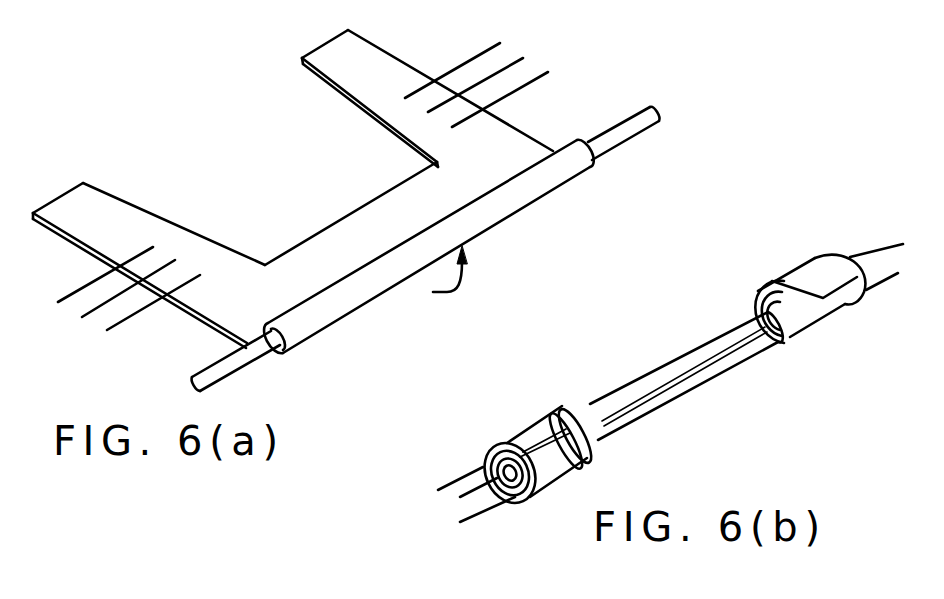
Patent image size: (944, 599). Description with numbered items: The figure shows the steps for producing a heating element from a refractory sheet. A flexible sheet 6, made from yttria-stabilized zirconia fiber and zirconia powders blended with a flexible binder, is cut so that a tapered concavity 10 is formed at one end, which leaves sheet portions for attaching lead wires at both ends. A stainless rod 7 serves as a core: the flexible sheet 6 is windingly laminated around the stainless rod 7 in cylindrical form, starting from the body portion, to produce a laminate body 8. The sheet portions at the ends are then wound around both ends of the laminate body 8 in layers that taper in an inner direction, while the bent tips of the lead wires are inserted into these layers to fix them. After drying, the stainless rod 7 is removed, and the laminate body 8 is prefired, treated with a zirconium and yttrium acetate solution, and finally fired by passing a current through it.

The flexible sheet 6 is at (505, 210).
The stainless rod 7 is at (615, 122).
The laminate body 8 is at (678, 358).
The concavity 10 is at (343, 213).